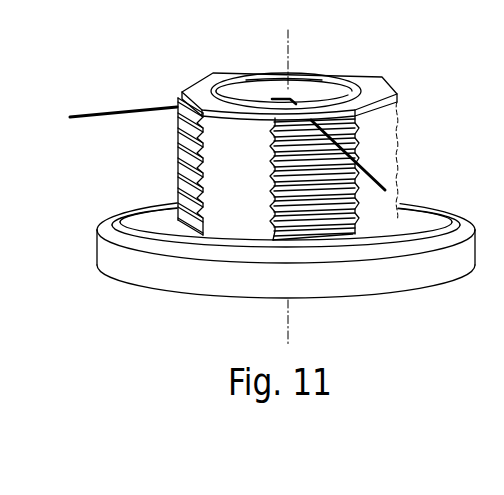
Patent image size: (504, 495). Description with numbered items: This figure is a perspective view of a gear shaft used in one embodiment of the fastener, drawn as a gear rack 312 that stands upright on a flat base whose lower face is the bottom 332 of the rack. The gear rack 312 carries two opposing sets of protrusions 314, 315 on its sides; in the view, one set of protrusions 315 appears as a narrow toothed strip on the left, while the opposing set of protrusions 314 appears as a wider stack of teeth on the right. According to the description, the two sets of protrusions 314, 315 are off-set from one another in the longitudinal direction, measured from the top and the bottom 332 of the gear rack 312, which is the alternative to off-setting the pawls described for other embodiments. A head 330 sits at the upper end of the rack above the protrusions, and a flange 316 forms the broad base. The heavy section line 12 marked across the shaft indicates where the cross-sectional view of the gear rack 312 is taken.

The section line 12- 12 is at (122, 117).
The gear rack 312 is at (378, 103).
The protrusions 314 is at (340, 137).
The protrusions 315 is at (177, 107).
The washer flange 316 is at (430, 277).
The hex head top surface 330 is at (350, 73).
The bottom 332 is at (335, 298).